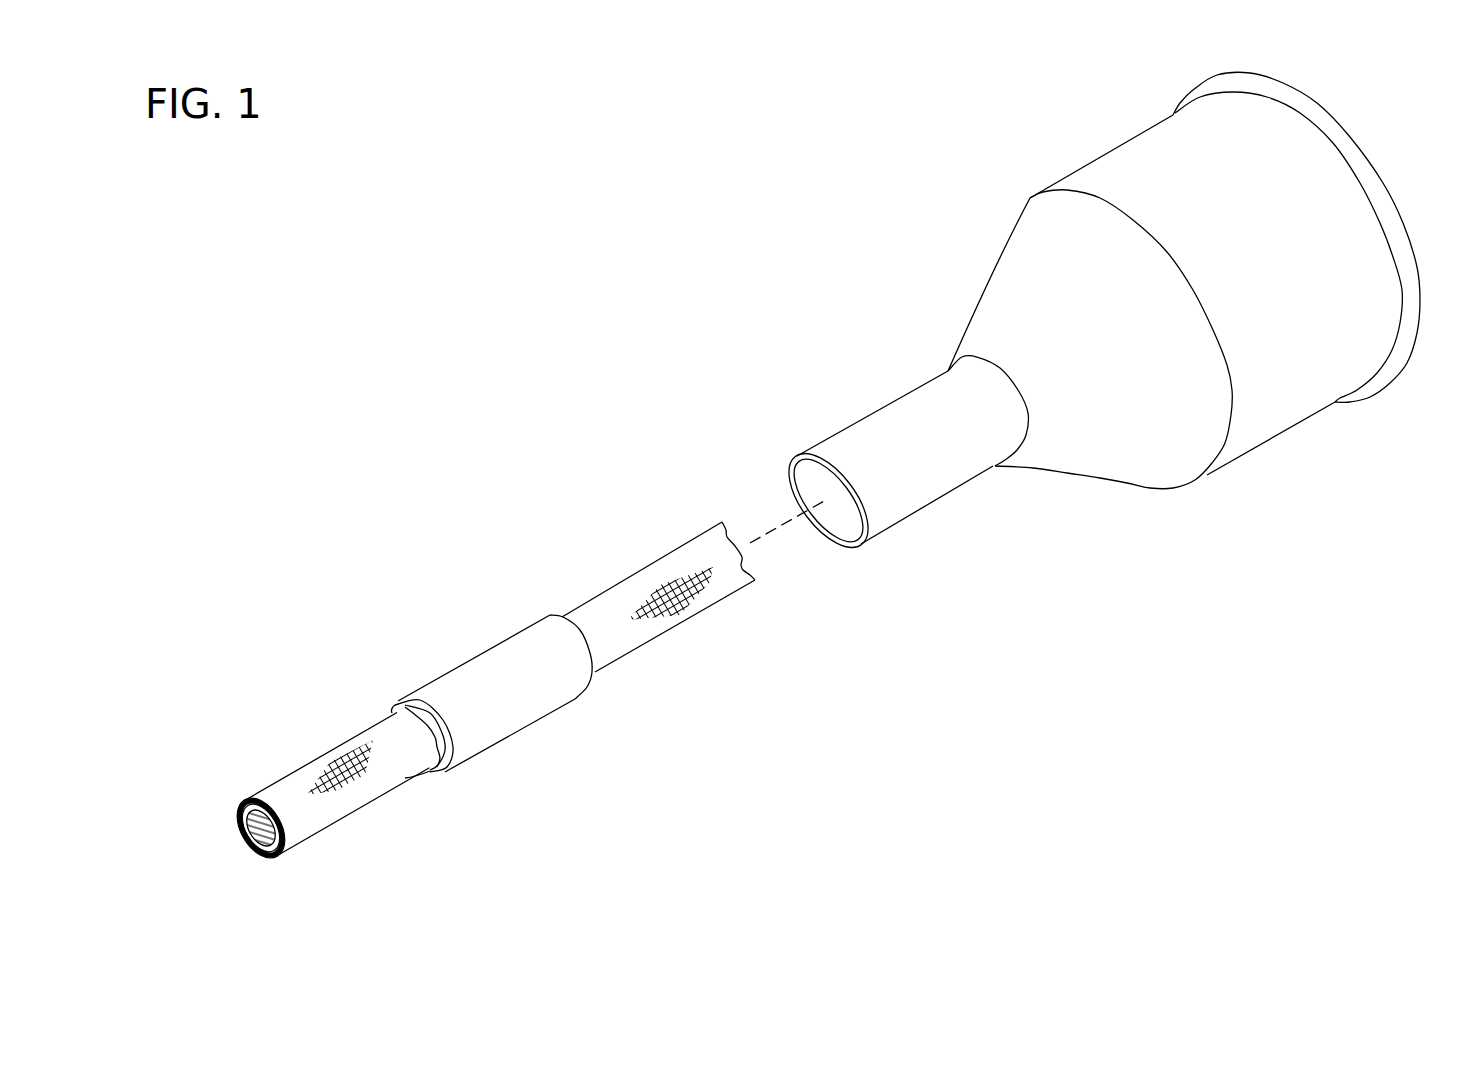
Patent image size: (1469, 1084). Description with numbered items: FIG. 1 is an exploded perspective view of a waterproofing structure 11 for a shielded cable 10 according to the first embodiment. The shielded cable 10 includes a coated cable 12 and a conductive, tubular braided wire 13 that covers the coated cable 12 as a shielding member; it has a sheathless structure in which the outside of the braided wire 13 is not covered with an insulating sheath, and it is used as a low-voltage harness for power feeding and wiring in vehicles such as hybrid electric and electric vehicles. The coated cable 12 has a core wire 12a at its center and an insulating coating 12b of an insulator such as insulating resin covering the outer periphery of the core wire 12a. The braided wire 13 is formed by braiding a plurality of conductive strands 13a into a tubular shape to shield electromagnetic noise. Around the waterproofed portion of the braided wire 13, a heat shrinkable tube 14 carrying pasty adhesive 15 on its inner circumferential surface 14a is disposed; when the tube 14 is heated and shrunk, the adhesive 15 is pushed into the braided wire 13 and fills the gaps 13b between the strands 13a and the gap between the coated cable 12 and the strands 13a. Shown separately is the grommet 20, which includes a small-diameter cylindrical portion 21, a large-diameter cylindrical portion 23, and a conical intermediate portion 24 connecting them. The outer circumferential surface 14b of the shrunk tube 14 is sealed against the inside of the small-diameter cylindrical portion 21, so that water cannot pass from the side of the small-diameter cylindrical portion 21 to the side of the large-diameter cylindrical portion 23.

The shielded cable 10 is at (642, 563).
The waterproofing structure 11 is at (477, 647).
The coated cable 12 is at (223, 828).
The core wire 12a is at (267, 847).
The insulating coating 12b is at (250, 797).
The braided wire 13 is at (345, 767).
The strands 13a is at (370, 767).
The gaps 13b is at (355, 787).
The heat shrinkable tube 14 is at (517, 699).
The inner circumferential surface 14a is at (408, 703).
The outer circumferential surface 14b is at (518, 708).
The adhesive 15 is at (442, 757).
The grommet 20 is at (1030, 197).
The small-diameter cylindrical portion 21 is at (925, 490).
The large-diameter cylindrical portion 23 is at (1270, 417).
The intermediate portion 24 is at (1123, 473).